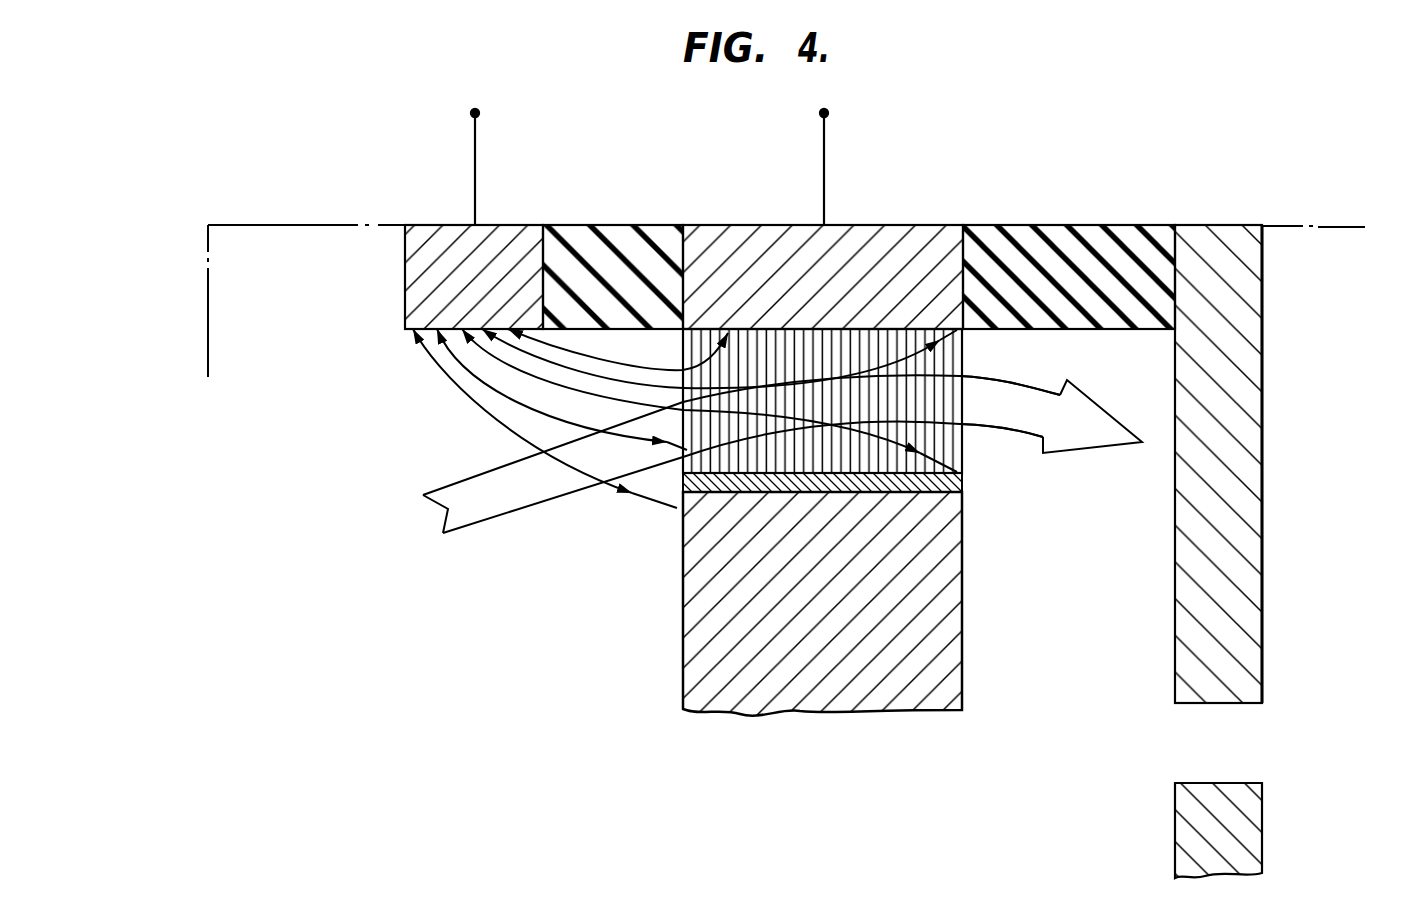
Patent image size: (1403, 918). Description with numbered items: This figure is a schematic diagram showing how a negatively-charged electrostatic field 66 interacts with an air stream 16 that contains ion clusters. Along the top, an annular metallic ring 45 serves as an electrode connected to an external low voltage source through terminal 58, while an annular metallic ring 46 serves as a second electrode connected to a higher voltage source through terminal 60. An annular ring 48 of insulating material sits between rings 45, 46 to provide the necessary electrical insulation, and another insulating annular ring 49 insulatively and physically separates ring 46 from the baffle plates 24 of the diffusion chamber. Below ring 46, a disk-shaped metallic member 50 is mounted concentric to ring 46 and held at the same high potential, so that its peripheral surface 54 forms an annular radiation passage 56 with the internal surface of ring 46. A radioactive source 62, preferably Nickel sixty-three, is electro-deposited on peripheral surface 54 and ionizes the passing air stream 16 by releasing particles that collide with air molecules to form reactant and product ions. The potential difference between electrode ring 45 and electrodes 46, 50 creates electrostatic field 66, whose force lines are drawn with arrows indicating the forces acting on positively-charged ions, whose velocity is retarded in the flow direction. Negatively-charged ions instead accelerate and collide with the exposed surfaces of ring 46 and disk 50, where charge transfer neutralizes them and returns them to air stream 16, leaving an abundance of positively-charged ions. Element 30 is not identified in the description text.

The air stream 16 is at (1085, 413).
The baffle plates 24 is at (1225, 232).
The wall section 30 is at (1253, 747).
The annular metallic ring 45 is at (422, 237).
The annular metallic ring 46 is at (758, 242).
The annular ring 48 is at (577, 230).
The annular ring 49 is at (1023, 238).
The disk-shaped metallic member 50 is at (942, 633).
The peripheral surface 54 is at (677, 485).
The annular radiation passage 56 is at (963, 358).
The terminal 58 is at (475, 112).
The terminal 60 is at (823, 111).
The radioactive source 62 is at (962, 480).
The electrostatic field 66 is at (550, 387).